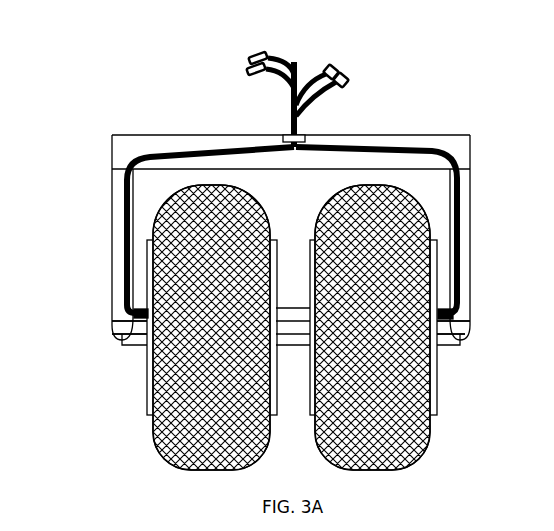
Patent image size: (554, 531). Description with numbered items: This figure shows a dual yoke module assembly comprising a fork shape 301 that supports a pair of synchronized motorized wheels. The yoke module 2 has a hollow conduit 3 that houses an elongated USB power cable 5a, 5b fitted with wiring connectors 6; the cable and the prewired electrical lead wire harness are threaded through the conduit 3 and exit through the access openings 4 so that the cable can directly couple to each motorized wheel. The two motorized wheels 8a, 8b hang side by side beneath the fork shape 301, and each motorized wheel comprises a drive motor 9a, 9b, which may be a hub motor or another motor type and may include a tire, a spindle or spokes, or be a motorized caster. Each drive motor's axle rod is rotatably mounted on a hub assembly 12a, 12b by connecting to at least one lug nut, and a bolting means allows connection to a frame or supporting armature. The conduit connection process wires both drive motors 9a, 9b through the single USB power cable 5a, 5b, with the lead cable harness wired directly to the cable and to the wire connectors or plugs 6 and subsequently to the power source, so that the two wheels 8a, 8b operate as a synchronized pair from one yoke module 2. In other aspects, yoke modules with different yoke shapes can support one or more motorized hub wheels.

The fork shape 301 is at (100, 50).
The yoke module 2 is at (114, 152).
The conduit 3 is at (260, 233).
The access openings 4 is at (300, 136).
The USB power cable 5a is at (322, 85).
The USB power cable 5b is at (347, 91).
The wiring connectors 6 is at (290, 107).
The motorized wheel 8a is at (158, 437).
The drive motor 9a is at (170, 327).
The motorized wheel 8b is at (428, 437).
The drive motor 9b is at (414, 327).
The hub assembly 12a is at (118, 338).
The hub assembly 12b is at (465, 338).